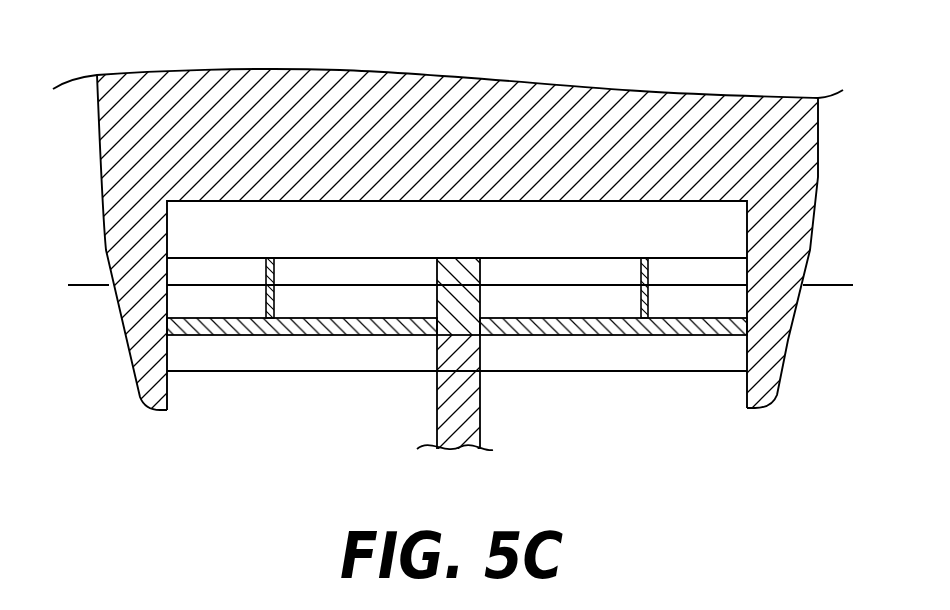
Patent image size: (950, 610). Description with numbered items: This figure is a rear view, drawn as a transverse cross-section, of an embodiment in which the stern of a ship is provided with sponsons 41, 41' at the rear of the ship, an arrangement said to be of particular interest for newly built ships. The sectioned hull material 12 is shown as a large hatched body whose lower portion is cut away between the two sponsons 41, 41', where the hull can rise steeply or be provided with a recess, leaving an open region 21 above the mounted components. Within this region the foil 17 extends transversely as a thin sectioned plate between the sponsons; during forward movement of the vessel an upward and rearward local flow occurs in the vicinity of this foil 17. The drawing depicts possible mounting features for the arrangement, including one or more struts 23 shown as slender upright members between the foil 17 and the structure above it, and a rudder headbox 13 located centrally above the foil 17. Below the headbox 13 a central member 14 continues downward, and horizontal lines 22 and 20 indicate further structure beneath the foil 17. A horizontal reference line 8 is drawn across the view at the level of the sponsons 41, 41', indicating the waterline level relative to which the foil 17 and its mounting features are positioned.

The housing body 12 is at (688, 115).
The cavity 21 is at (508, 217).
The sponson 41 is at (90, 242).
The sponson 41' is at (828, 253).
The reference plane 8 is at (833, 287).
The foil 17 is at (617, 335).
The rudder headbox 13 is at (450, 325).
The support post 14 is at (440, 430).
The strut 23 is at (266, 298).
The lower plate 22 is at (288, 373).
The gap 20 is at (708, 355).